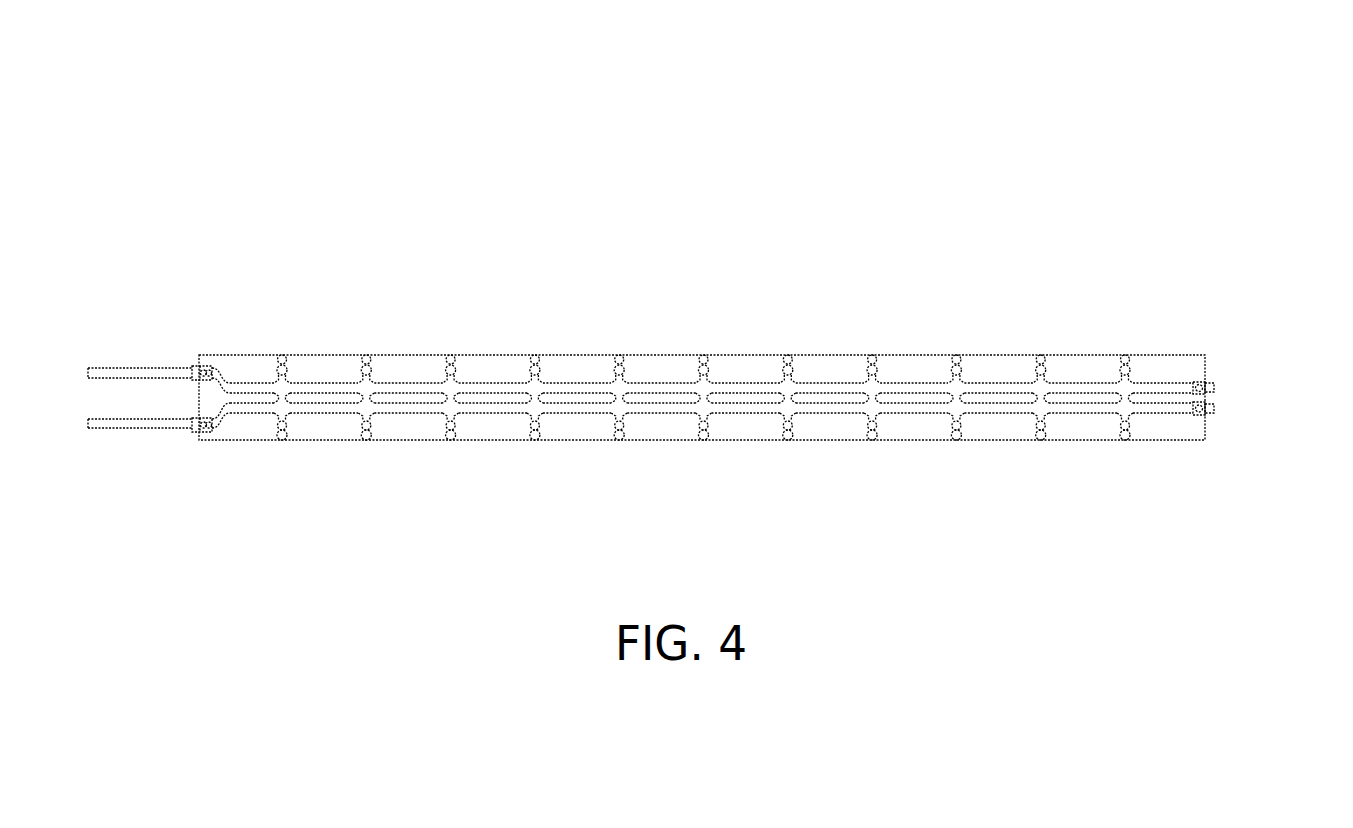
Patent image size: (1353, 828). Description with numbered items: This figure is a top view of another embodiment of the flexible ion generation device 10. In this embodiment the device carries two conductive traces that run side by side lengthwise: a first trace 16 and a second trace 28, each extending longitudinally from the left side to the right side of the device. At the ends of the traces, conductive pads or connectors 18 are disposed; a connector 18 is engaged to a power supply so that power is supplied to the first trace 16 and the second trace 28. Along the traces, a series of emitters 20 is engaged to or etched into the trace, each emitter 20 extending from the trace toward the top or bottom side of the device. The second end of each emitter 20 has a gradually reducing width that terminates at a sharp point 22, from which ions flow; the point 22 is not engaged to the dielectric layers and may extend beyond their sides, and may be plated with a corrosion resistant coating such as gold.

The flexible ion generation device 10 is at (892, 112).
The trace 16 is at (1171, 387).
The connector 18 is at (197, 362).
The emitter 20 is at (630, 364).
The point 22 is at (1050, 366).
The second trace 28 is at (1147, 415).